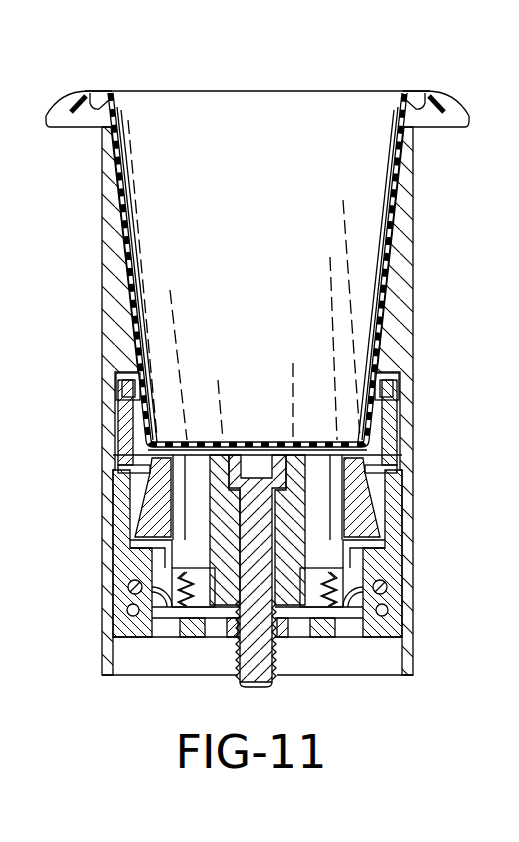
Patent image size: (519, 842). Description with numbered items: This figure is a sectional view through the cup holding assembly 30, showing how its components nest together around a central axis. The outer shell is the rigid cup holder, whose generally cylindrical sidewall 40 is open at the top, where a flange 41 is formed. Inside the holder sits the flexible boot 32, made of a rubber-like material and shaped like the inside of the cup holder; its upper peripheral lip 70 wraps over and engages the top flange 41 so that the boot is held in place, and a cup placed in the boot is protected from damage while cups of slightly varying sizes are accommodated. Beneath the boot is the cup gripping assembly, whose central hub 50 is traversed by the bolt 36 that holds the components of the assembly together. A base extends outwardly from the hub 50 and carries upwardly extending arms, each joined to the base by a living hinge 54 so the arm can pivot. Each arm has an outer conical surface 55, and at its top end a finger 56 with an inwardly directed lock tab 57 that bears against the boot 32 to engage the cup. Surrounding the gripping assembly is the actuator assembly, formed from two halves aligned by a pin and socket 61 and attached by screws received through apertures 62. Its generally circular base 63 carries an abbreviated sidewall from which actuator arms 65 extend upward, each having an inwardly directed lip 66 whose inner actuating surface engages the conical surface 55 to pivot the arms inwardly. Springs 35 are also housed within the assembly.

The cup holding assembly 30 is at (250, 62).
The flexible boot 32 is at (123, 188).
The springs 35 is at (177, 583).
The bolt 36 is at (258, 500).
The sidewall 40 is at (120, 250).
The flange 41 is at (98, 100).
The central hub 50 is at (187, 567).
The living hinge 54 is at (175, 612).
The outer conical surface 55 is at (142, 505).
The finger 56 is at (128, 425).
The lock tab 57 is at (135, 395).
The socket 61 is at (137, 590).
The apertures 62 is at (382, 610).
The circular base 63 is at (188, 628).
The actuator arms 65 is at (118, 512).
The lip 66 is at (143, 477).
The upper peripheral lip 70 is at (78, 97).